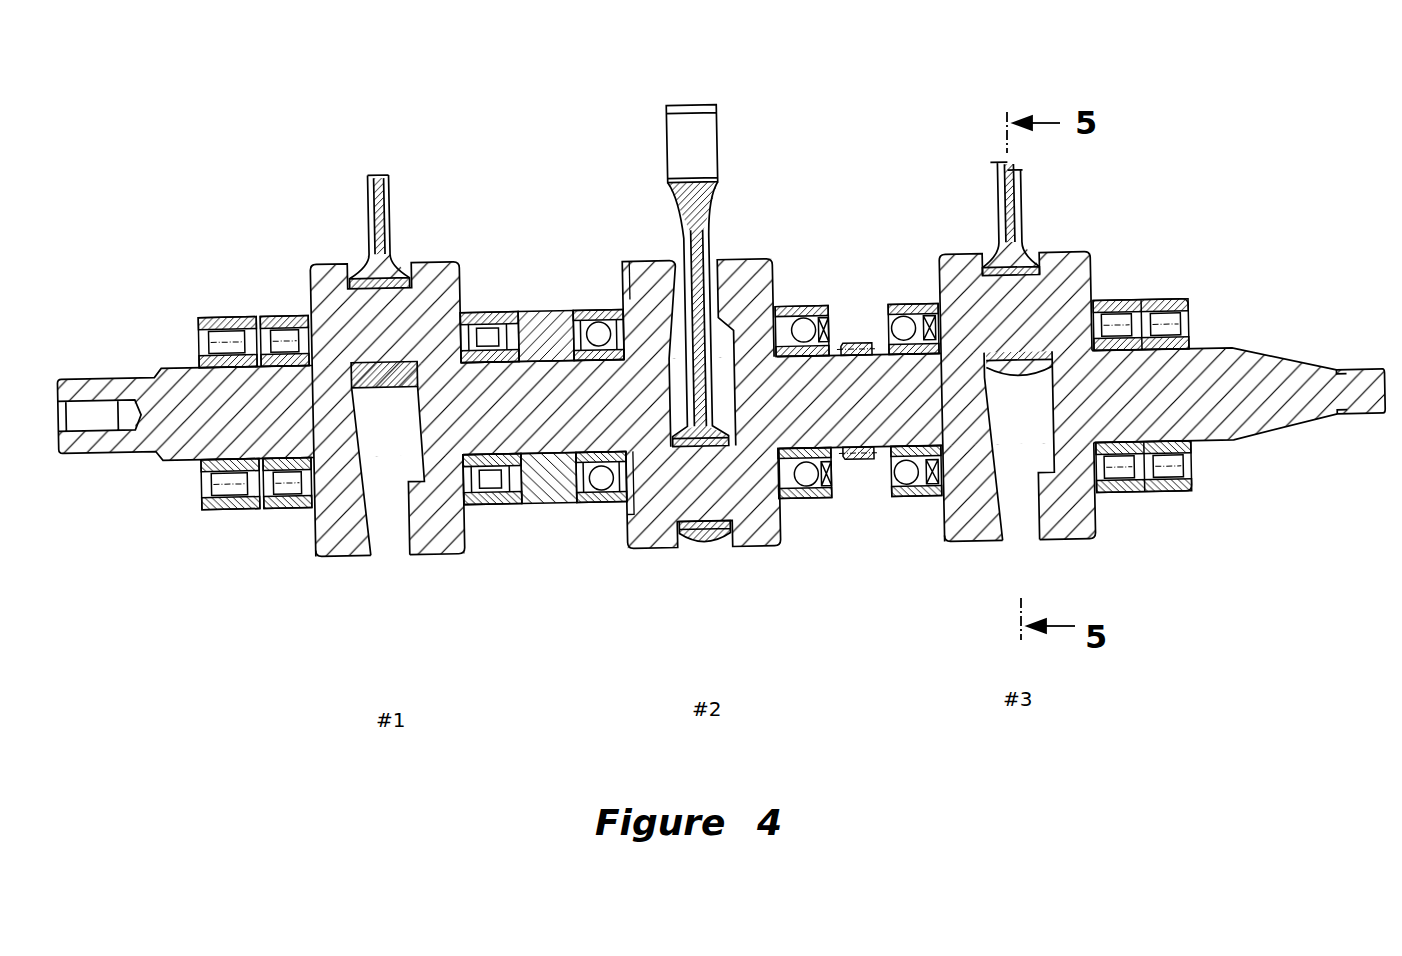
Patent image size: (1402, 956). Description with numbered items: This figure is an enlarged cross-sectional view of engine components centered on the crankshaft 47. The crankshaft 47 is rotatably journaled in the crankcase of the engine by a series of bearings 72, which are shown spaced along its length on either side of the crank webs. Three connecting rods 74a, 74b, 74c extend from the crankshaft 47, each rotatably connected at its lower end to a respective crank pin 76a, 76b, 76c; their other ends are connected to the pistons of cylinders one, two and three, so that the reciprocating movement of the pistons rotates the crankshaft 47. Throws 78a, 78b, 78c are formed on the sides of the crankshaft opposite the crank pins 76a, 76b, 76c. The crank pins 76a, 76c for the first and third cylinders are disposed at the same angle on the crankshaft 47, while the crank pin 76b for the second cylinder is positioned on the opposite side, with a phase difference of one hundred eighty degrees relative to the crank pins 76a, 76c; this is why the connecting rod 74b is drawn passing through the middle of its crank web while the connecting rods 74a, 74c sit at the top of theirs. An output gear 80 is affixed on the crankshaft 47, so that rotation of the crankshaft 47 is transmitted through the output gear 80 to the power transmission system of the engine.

The crankshaft 47 is at (1221, 345).
The bearings 72 is at (232, 315).
The connecting rod 74a is at (391, 212).
The connecting rod 74b is at (679, 210).
The connecting rod 74c is at (1026, 200).
The crank pin 76a is at (449, 298).
The crank pin 76b is at (758, 516).
The crank pin 76c is at (1088, 286).
The throw 78a is at (418, 553).
The throw 78b is at (745, 257).
The throw 78c is at (1040, 528).
The output gear 80 is at (860, 338).